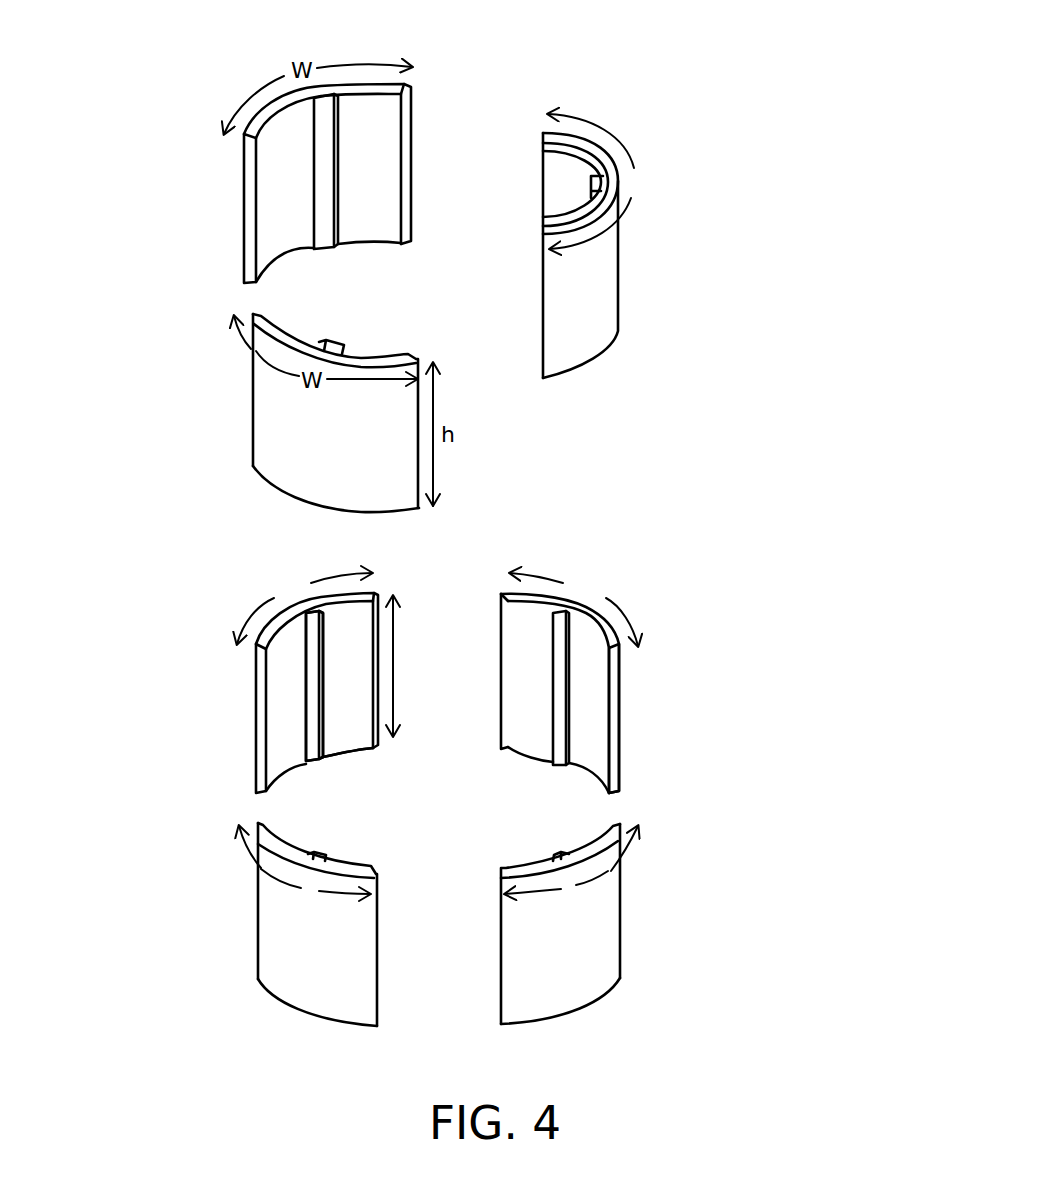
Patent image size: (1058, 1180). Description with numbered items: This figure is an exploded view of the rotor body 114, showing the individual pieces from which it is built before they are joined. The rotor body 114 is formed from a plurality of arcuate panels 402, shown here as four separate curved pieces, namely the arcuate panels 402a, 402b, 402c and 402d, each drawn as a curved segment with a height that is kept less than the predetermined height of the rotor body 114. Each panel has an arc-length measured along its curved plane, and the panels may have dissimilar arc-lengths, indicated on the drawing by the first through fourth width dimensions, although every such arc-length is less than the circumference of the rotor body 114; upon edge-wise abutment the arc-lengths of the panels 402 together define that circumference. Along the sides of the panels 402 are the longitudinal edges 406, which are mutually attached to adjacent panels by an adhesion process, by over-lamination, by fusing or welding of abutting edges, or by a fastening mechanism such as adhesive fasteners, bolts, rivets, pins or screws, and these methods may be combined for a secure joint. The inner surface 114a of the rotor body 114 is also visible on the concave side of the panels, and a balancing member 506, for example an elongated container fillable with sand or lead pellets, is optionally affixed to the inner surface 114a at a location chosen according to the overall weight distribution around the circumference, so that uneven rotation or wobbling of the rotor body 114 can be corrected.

The rotor body 114 is at (665, 98).
The inner surface of the rotor body 114a is at (343, 735).
The arcuate panels 402 is at (580, 343).
The arcuate panel 402a is at (600, 955).
The arcuate panel 402b is at (588, 733).
The arcuate panel 402c is at (277, 732).
The arcuate panel 402d is at (272, 943).
The longitudinal edges 406 is at (242, 200).
The balancing member 506 is at (317, 757).